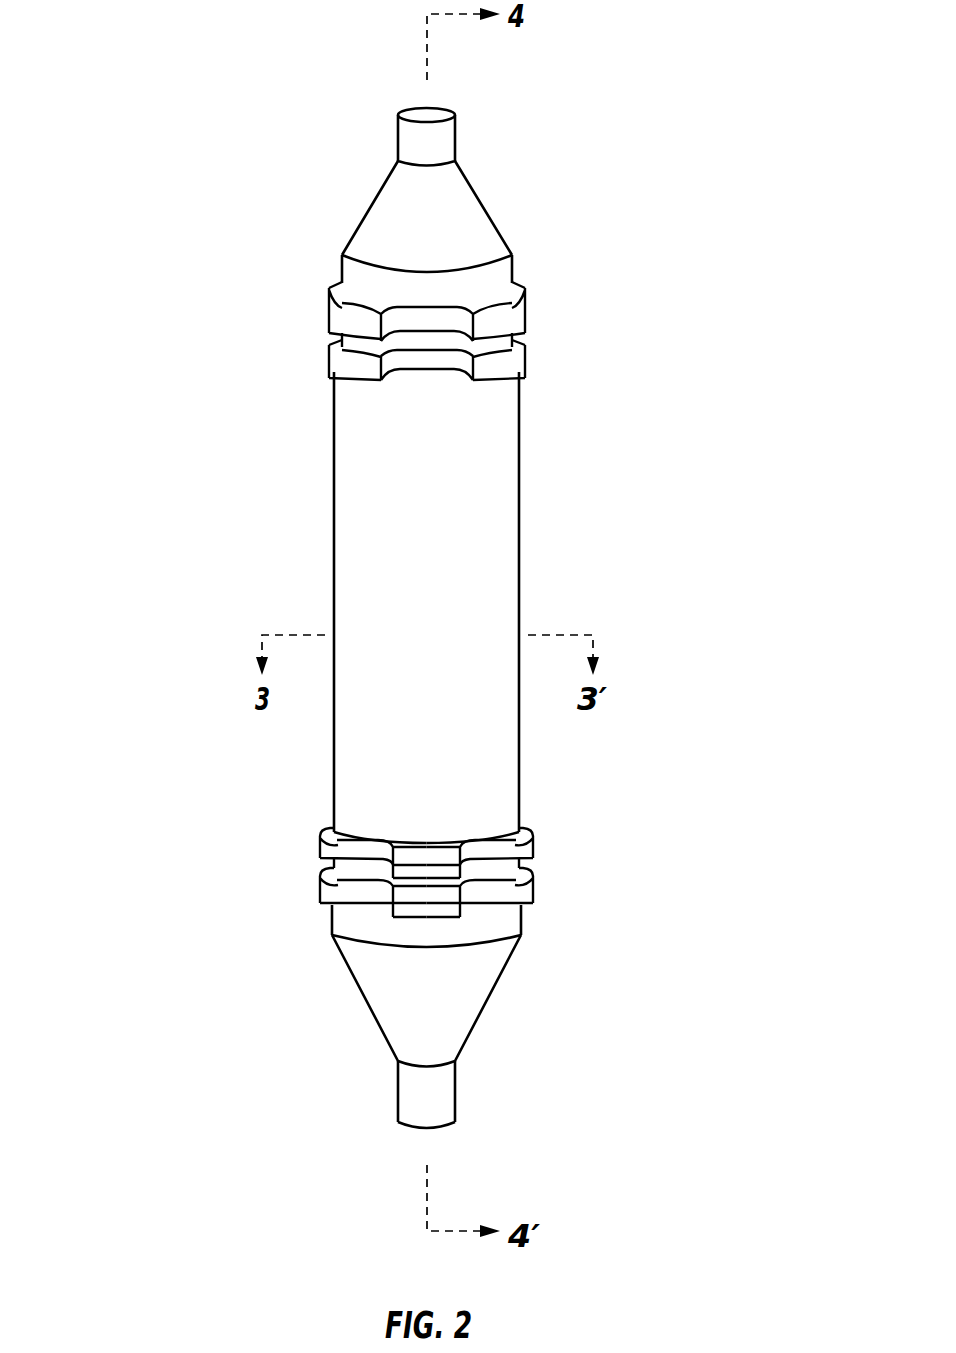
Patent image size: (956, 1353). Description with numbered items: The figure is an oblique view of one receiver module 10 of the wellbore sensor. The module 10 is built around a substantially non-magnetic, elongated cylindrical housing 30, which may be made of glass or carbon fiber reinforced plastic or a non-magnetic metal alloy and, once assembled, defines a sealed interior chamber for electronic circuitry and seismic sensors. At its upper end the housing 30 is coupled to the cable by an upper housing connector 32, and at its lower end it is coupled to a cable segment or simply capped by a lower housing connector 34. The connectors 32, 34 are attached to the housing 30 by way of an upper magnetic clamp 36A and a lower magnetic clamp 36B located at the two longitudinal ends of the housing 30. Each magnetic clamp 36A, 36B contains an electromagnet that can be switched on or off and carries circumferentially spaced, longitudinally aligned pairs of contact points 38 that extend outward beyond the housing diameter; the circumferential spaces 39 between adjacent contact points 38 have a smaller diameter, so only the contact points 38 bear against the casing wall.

The module 10 is at (166, 576).
The housing 30 is at (488, 608).
The upper housing connector 32 is at (470, 218).
The lower housing connector 34 is at (458, 1012).
The upper magnetic clamp 36A is at (329, 329).
The lower magnetic clamp 36B is at (307, 893).
The contact points 38 is at (336, 368).
The circumferential spaces 39 is at (360, 892).